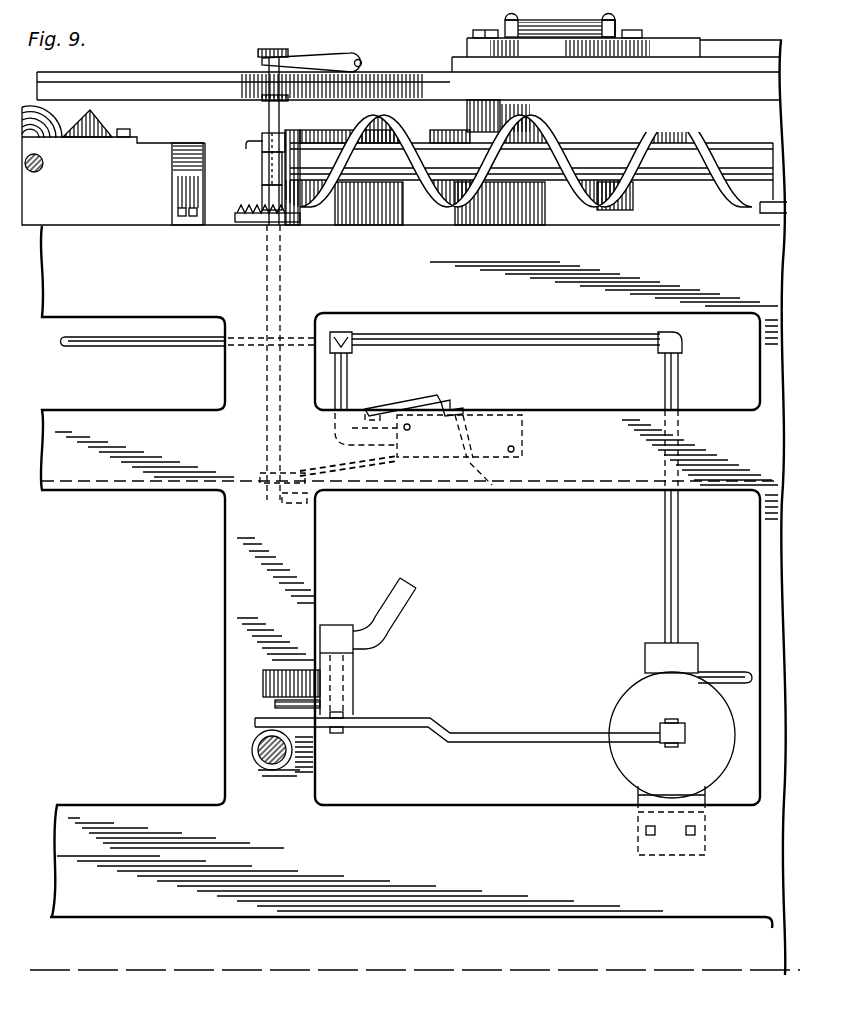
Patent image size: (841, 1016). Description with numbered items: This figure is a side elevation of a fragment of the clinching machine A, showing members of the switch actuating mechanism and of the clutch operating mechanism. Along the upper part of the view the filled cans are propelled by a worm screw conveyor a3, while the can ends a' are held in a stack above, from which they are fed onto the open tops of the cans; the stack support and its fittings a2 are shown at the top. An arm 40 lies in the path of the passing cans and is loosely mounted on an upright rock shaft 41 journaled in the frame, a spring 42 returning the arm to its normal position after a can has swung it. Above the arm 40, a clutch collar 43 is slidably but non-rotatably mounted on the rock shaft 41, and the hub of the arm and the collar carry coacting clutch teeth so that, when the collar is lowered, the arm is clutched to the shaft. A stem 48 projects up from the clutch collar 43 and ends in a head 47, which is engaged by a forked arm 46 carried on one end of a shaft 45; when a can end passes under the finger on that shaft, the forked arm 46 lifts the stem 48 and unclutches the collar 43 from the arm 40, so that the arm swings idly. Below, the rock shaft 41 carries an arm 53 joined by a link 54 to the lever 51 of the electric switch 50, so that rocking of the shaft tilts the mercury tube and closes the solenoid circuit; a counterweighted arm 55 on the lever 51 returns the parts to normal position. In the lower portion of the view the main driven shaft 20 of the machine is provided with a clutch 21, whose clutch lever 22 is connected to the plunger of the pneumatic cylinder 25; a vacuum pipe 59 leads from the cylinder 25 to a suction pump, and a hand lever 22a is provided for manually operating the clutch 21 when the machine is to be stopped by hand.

The clinching machine A is at (463, 918).
The can ends a' is at (557, 56).
The guide bar bracket a2 is at (615, 24).
The worm screw conveyor a3 is at (720, 153).
The head 47 is at (265, 49).
The forked arm 46 is at (322, 58).
The shaft 45 is at (368, 56).
The stem 48 is at (268, 116).
The clutch collar 43 is at (262, 163).
The arm 40 is at (262, 190).
The spring 42 is at (260, 218).
The rock shaft 41 is at (283, 247).
The electric switch 50 is at (508, 428).
The counterweighted arm 55 is at (410, 409).
The lever 51 is at (490, 492).
The link 54 is at (383, 467).
The arm 53 is at (295, 495).
The hand lever 22a is at (478, 629).
The clutch lever 22 is at (500, 737).
The clutch 21 is at (248, 741).
The main driven shaft 20 is at (247, 754).
The pneumatic cylinder 25 is at (672, 749).
The vacuum pipe 59 is at (729, 673).